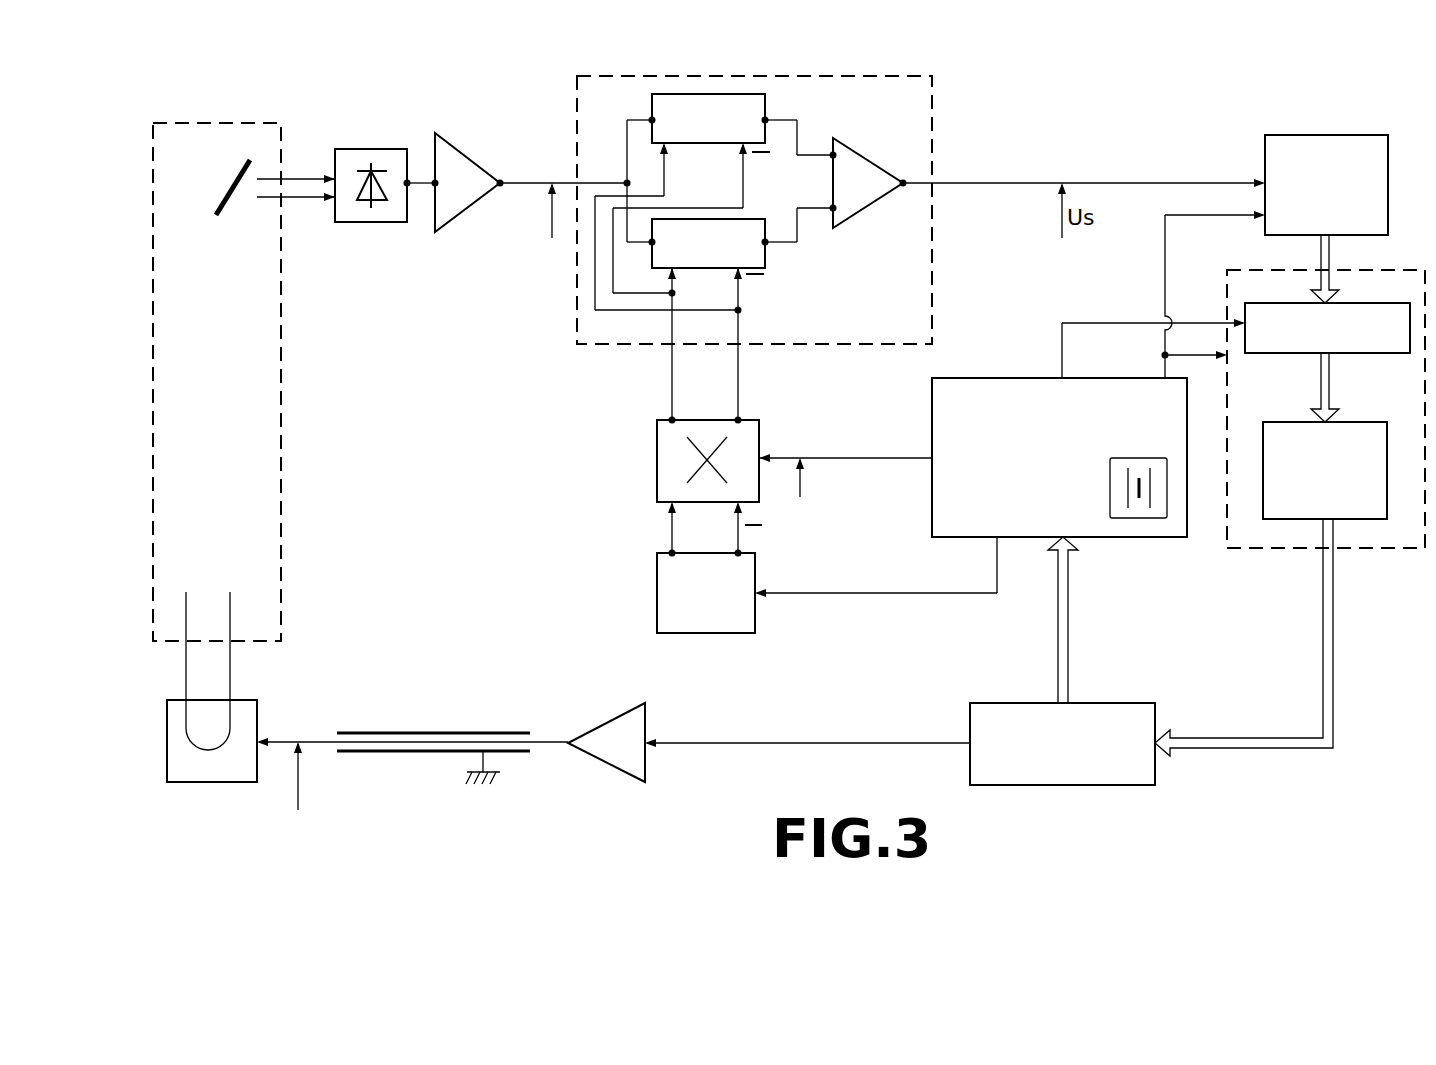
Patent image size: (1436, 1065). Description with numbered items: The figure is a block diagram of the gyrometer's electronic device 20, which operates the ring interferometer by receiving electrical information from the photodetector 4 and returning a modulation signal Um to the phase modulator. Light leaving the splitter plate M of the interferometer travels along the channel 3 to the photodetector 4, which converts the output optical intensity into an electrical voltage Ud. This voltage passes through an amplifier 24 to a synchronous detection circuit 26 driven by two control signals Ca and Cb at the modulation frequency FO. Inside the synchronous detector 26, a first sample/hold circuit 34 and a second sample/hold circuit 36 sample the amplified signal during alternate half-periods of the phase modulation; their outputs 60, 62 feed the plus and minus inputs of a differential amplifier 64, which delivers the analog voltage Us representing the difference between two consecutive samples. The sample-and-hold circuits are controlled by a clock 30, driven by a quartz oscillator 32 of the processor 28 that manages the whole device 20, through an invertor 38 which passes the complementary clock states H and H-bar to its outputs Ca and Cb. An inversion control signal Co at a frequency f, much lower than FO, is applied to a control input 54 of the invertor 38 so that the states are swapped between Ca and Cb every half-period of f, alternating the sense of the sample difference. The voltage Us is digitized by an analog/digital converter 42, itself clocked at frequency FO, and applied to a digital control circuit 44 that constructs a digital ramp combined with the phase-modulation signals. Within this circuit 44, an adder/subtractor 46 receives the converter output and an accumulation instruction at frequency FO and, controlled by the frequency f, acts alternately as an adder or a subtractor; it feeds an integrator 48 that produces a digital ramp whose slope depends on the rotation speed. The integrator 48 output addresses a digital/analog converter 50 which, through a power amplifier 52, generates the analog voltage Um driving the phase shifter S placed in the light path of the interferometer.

The electronic device 20 is at (1090, 92).
The channel 3 is at (295, 178).
The photodetector 4 is at (362, 149).
The amplifier 24 is at (476, 160).
The synchronous detection circuit 26 is at (808, 70).
The first sample/hold circuit 34 is at (767, 104).
The second sample/hold circuit 36 is at (767, 257).
The output of first sample-and-hold circuit 60 is at (768, 119).
The output of second sample-and-hold circuit 62 is at (768, 243).
The differential amplifier 64 is at (866, 160).
The invertor 38 is at (657, 458).
The control input 54 is at (759, 442).
The clock 30 is at (657, 595).
The processor 28 is at (990, 378).
The quartz oscillator 32 is at (1122, 458).
The analog/digital converter 42 is at (1343, 135).
The digital control circuit 44 is at (1378, 554).
The adder/subtractor 46 is at (1280, 355).
The integrator 48 is at (1355, 422).
The digital/analog converter 50 is at (1120, 703).
The power amplifier 52 is at (605, 722).
The splitter plate M is at (232, 180).
The actuator coil S is at (257, 718).